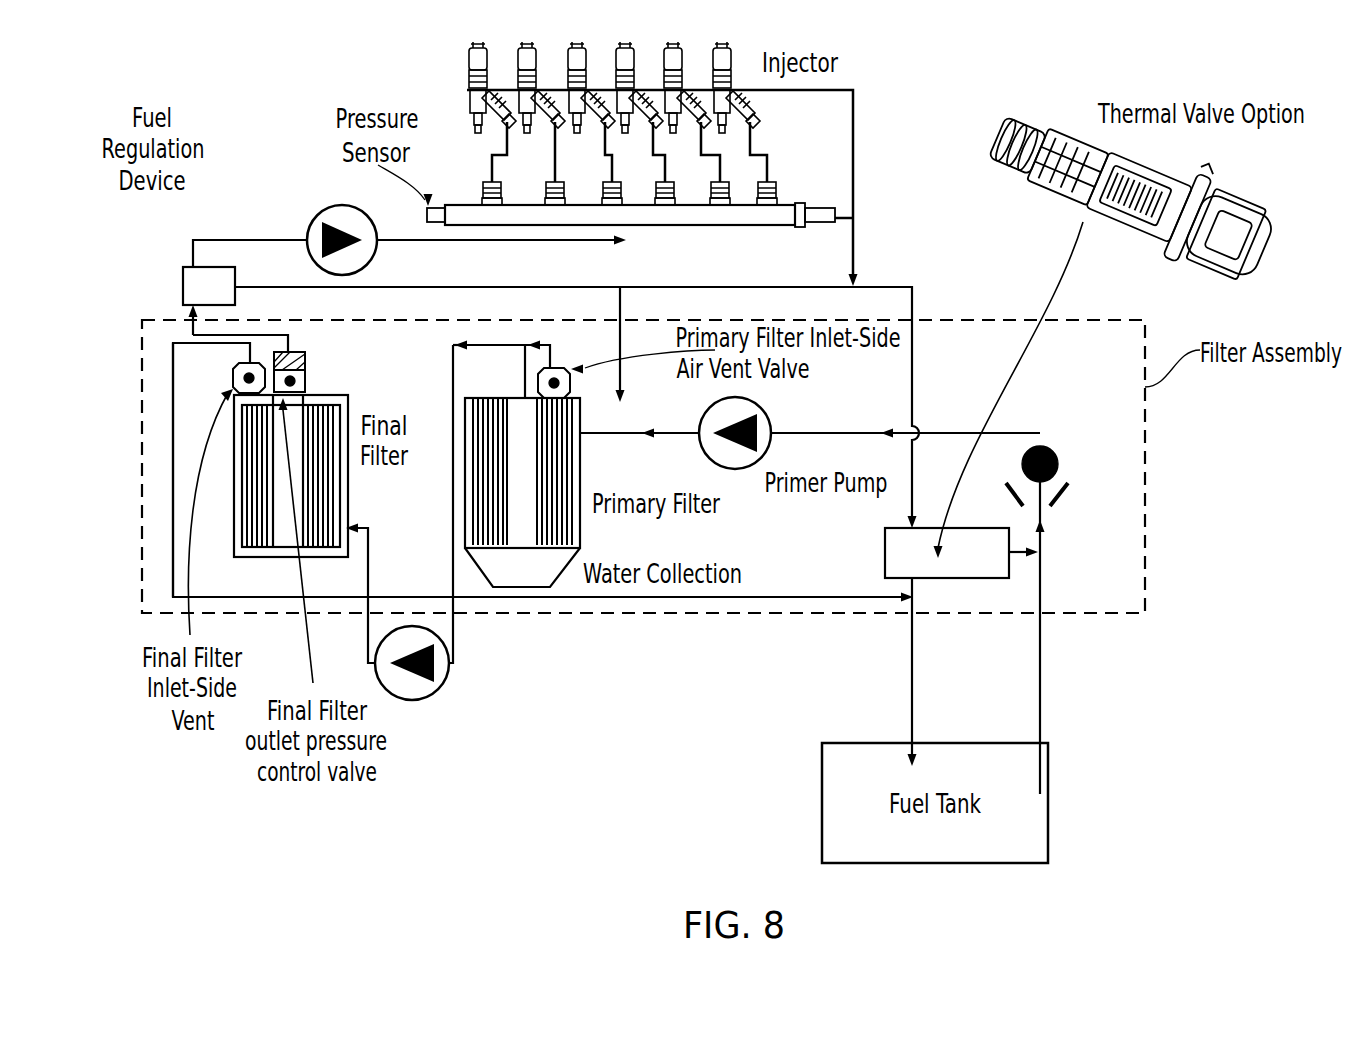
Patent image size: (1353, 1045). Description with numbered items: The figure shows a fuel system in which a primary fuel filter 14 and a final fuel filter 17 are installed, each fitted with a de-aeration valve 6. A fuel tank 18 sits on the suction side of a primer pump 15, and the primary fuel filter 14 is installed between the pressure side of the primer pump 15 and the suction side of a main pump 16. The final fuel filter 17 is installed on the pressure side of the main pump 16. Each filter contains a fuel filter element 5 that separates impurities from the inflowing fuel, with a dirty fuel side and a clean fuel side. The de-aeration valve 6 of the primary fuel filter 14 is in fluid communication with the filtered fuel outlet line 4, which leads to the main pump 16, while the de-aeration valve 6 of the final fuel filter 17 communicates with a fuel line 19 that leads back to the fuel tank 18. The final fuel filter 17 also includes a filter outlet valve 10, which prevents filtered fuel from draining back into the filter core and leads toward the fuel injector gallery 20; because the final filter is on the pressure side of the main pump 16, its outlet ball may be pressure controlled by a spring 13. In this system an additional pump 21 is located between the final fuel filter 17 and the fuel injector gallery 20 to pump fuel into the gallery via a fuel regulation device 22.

The filtered fuel outlet line 4 is at (493, 347).
The fuel filter element 5 is at (257, 530).
The de-aeration valve 6 is at (233, 380).
The filter outlet valve 10 is at (305, 386).
The spring 13 is at (305, 366).
The primary fuel filter 14 is at (578, 520).
The primer pump 15 is at (768, 417).
The main pump 16 is at (440, 695).
The final fuel filter 17 is at (348, 510).
The fuel tank 18 is at (822, 810).
The fuel line 19 is at (173, 463).
The fuel injector gallery 20 is at (738, 52).
The additional pump 21 is at (316, 216).
The fuel regulation device 22 is at (183, 287).